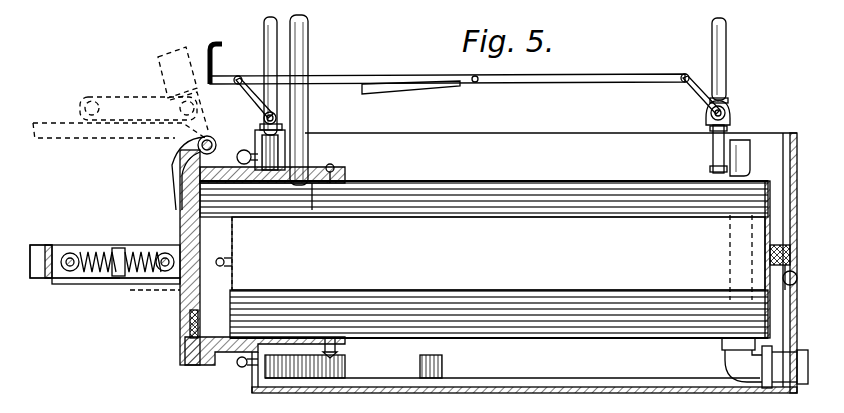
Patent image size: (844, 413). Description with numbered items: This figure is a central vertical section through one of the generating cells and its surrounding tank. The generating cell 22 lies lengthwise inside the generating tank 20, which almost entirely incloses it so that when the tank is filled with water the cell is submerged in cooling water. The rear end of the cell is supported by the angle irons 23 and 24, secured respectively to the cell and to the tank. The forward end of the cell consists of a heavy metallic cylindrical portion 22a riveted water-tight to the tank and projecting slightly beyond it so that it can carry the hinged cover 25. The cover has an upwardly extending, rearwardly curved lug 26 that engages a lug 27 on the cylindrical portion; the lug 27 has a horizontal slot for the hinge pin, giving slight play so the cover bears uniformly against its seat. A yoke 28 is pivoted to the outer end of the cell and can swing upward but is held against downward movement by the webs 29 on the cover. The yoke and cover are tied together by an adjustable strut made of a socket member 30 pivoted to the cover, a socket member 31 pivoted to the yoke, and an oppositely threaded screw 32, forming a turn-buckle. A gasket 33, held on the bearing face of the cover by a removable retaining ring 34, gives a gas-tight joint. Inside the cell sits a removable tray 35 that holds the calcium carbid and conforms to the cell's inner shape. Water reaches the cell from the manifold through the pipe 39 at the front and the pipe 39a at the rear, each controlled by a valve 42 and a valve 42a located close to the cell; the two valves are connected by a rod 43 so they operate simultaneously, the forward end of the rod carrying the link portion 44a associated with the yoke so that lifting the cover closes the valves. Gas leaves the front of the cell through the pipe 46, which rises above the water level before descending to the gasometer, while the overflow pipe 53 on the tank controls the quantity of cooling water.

The generating tank 20 is at (514, 133).
The generating cell 22 is at (490, 181).
The cylindrical portion 22a is at (226, 356).
The angle iron 23 is at (766, 246).
The angle iron 24 is at (765, 262).
The hinged cover 25 is at (180, 213).
The upwardly extending lug 26 is at (172, 164).
The lug 27 is at (236, 140).
The yoke 28 is at (52, 280).
The lug or web 29 is at (182, 327).
The internally threaded socket member 30 is at (130, 280).
The internally threaded socket member 31 is at (86, 280).
The oppositely threaded screw 32 is at (117, 248).
The gasket 33 is at (196, 356).
The retaining ring 34 is at (183, 343).
The tray or calcium carbid holding member 35 is at (498, 253).
The pipe 39 is at (264, 36).
The pipe 39a is at (727, 22).
The valve 42 is at (264, 118).
The valve 42a is at (725, 112).
The rod 43 is at (368, 72).
The wedge 44a is at (385, 90).
The pipe or conduit 46 is at (308, 43).
The overflow pipe 53 is at (750, 143).